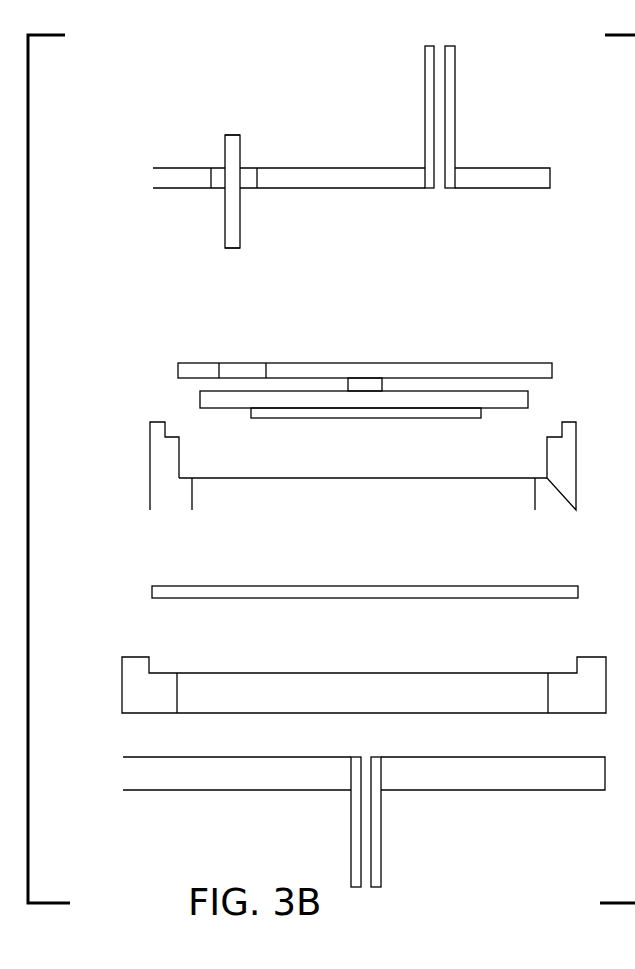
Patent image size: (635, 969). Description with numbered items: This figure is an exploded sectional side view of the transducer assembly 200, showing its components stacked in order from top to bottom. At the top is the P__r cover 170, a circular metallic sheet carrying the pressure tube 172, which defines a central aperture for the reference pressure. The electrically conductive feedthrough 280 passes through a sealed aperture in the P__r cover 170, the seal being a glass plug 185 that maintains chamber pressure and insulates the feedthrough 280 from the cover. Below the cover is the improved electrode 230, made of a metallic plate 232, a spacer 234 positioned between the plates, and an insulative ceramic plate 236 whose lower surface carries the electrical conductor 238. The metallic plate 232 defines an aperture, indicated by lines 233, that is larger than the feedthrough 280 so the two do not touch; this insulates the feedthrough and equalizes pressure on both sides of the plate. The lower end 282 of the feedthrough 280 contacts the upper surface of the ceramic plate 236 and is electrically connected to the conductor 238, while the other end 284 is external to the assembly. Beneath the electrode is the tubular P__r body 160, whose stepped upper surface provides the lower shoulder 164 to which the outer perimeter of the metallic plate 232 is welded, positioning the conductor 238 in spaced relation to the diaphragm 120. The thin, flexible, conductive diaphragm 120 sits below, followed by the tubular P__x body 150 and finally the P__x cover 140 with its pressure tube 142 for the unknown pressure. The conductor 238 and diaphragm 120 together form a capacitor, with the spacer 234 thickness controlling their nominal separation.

The diaphragm 120 is at (412, 585).
The P__x cover 140 is at (364, 822).
The pressure tube 142 is at (383, 872).
The P__x body 150 is at (119, 683).
The P__r body 160 is at (339, 466).
The lower shoulder 164 is at (182, 477).
The P__r cover 170 is at (351, 117).
The pressure tube 172 is at (423, 118).
The glass plug 185 is at (244, 167).
The transducer assembly 200 is at (165, 812).
The electrode 230 is at (388, 392).
The metallic plate 232 is at (525, 360).
The aperture 233 is at (218, 368).
The spacer 234 is at (348, 380).
The ceramic plate 236 is at (532, 403).
The electrical conductor 238 is at (392, 419).
The feedthrough 280 is at (224, 160).
The lower end 282 is at (230, 250).
The other end 284 is at (235, 133).